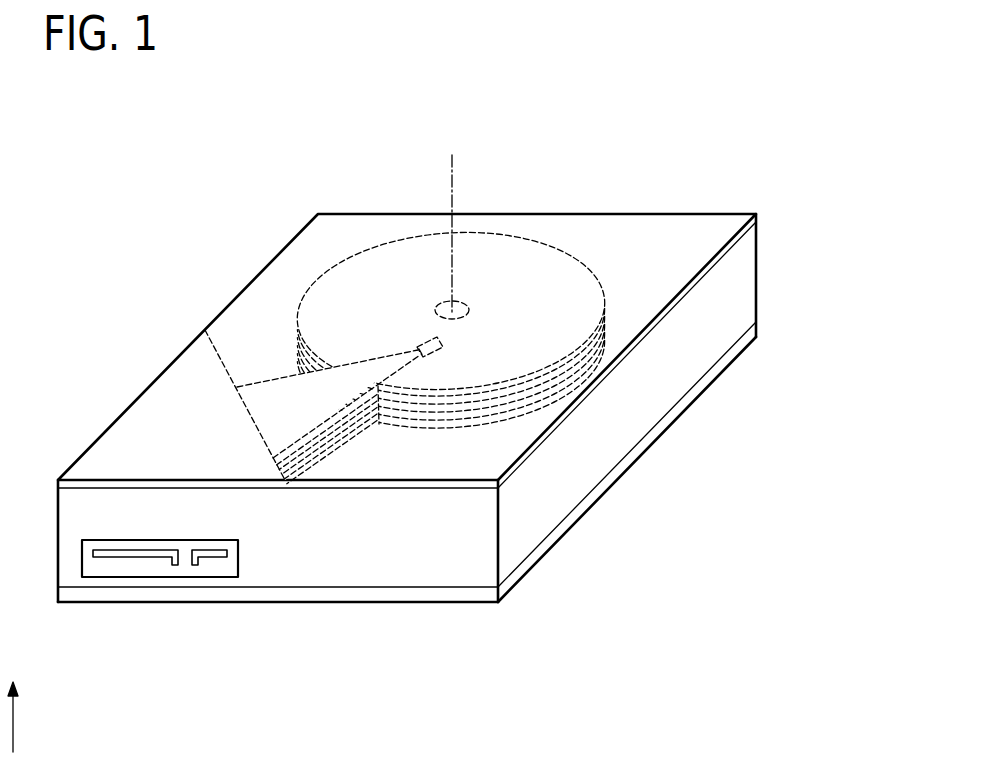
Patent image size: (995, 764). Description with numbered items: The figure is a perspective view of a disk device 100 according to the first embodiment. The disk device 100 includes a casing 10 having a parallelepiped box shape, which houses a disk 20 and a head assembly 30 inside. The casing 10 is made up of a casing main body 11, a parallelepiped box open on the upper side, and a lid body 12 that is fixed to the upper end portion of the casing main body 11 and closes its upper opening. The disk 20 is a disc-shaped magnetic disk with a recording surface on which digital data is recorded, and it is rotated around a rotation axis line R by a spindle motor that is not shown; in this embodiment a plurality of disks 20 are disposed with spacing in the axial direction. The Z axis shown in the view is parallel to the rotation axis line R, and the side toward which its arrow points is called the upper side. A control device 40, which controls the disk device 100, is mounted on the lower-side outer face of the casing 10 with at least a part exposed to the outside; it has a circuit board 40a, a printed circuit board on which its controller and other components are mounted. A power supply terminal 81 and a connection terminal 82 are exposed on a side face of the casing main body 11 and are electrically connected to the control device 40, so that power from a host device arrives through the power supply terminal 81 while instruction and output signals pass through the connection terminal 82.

The disk device 100 is at (773, 131).
The casing 10 is at (766, 262).
The lid body 12 is at (712, 227).
The casing main body 11 is at (697, 357).
The control device 40 is at (377, 612).
The circuit board 40a is at (548, 540).
The disk 20 is at (553, 240).
The head assembly 30 is at (286, 366).
The power supply terminal 81 is at (140, 558).
The connection terminal 82 is at (208, 558).
The rotation axis line R is at (452, 173).
The Z axis Z is at (14, 696).